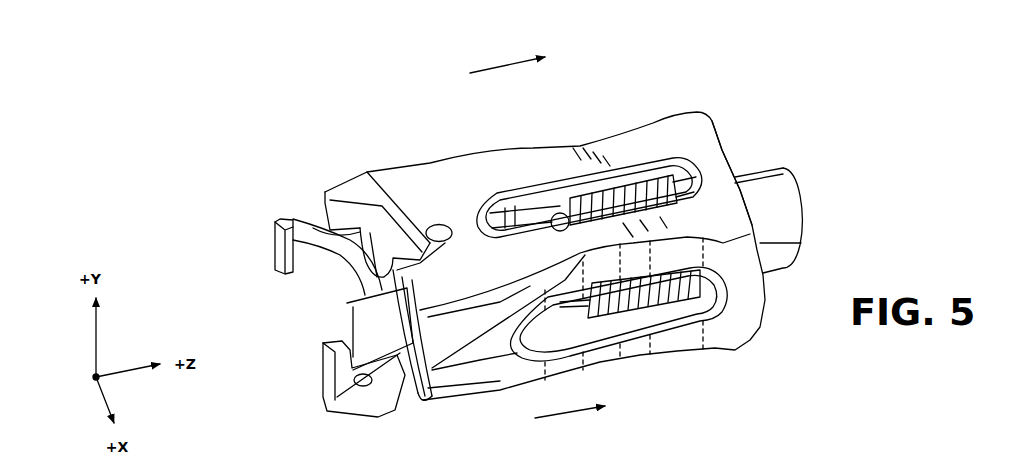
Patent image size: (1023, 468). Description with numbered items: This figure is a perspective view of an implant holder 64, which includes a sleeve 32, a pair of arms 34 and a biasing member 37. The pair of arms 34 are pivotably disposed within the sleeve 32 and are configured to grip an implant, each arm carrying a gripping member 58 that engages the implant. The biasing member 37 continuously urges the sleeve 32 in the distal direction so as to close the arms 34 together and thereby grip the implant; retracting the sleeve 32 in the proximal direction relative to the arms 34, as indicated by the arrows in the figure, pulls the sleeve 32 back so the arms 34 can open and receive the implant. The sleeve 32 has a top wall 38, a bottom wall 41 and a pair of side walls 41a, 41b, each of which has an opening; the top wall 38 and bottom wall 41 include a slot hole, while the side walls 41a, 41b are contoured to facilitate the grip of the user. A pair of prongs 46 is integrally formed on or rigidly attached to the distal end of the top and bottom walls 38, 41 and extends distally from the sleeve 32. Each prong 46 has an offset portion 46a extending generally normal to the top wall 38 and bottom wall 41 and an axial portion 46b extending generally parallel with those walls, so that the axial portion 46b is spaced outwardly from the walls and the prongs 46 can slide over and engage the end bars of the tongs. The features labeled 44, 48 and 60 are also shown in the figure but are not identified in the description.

The sleeve 32 is at (658, 62).
The pair of arms 34 is at (262, 240).
The biasing member 37 is at (640, 300).
The top wall 38 is at (697, 142).
The bottom wall 41 is at (717, 352).
The side wall 41a is at (740, 312).
The side wall 41b is at (513, 148).
The dimple 44 is at (448, 226).
The pair of prongs 46 is at (352, 187).
The offset portion 46a is at (425, 255).
The axial portion 46b is at (302, 222).
The boss 48 is at (760, 185).
The gripping member 58 is at (273, 258).
The tab 60 is at (440, 225).
The implant holder 64 is at (410, 105).